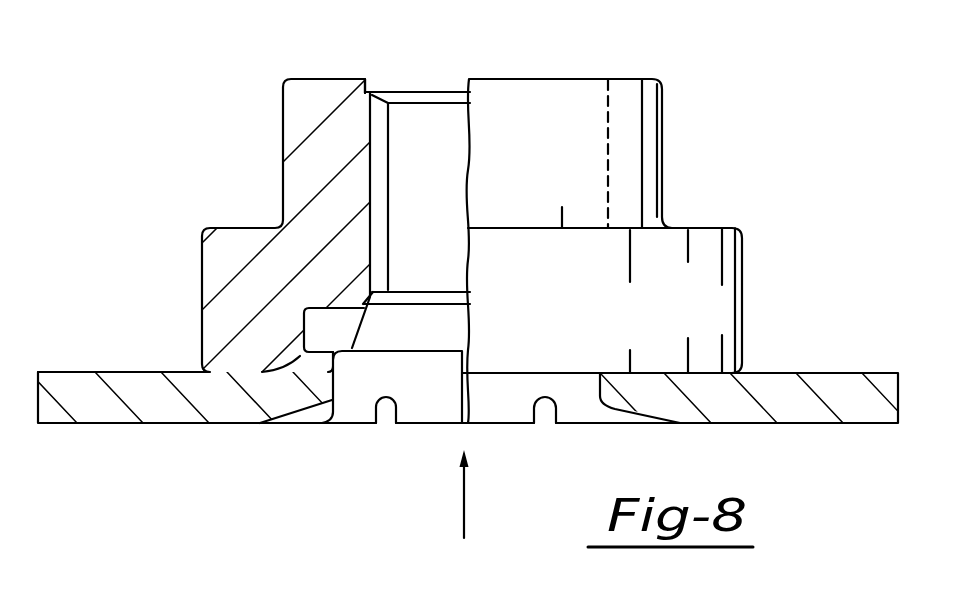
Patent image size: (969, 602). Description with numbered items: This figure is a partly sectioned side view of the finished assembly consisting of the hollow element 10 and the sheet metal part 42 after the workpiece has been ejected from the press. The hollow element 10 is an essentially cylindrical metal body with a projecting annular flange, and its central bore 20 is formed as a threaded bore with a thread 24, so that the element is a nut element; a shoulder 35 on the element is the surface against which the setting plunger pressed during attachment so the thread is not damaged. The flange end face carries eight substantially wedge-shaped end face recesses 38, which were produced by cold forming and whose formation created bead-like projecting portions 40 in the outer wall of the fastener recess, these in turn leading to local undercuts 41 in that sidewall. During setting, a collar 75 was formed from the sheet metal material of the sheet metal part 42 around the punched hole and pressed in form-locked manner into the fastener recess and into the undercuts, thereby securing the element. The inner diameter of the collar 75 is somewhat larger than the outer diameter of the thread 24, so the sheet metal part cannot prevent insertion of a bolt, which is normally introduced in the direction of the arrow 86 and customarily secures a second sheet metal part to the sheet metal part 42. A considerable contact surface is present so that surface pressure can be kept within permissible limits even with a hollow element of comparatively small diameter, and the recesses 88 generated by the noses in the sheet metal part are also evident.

The hollow element 10 is at (742, 290).
The bore 20 is at (391, 183).
The thread 24 is at (368, 122).
The shoulder 35 is at (707, 228).
The end face recesses 38 is at (297, 353).
The projecting portions 40 is at (306, 340).
The undercuts 41 is at (306, 320).
The sheet metal part 42 is at (767, 425).
The collar 75 is at (356, 329).
The arrow 86 is at (462, 497).
The recesses 88 is at (387, 423).